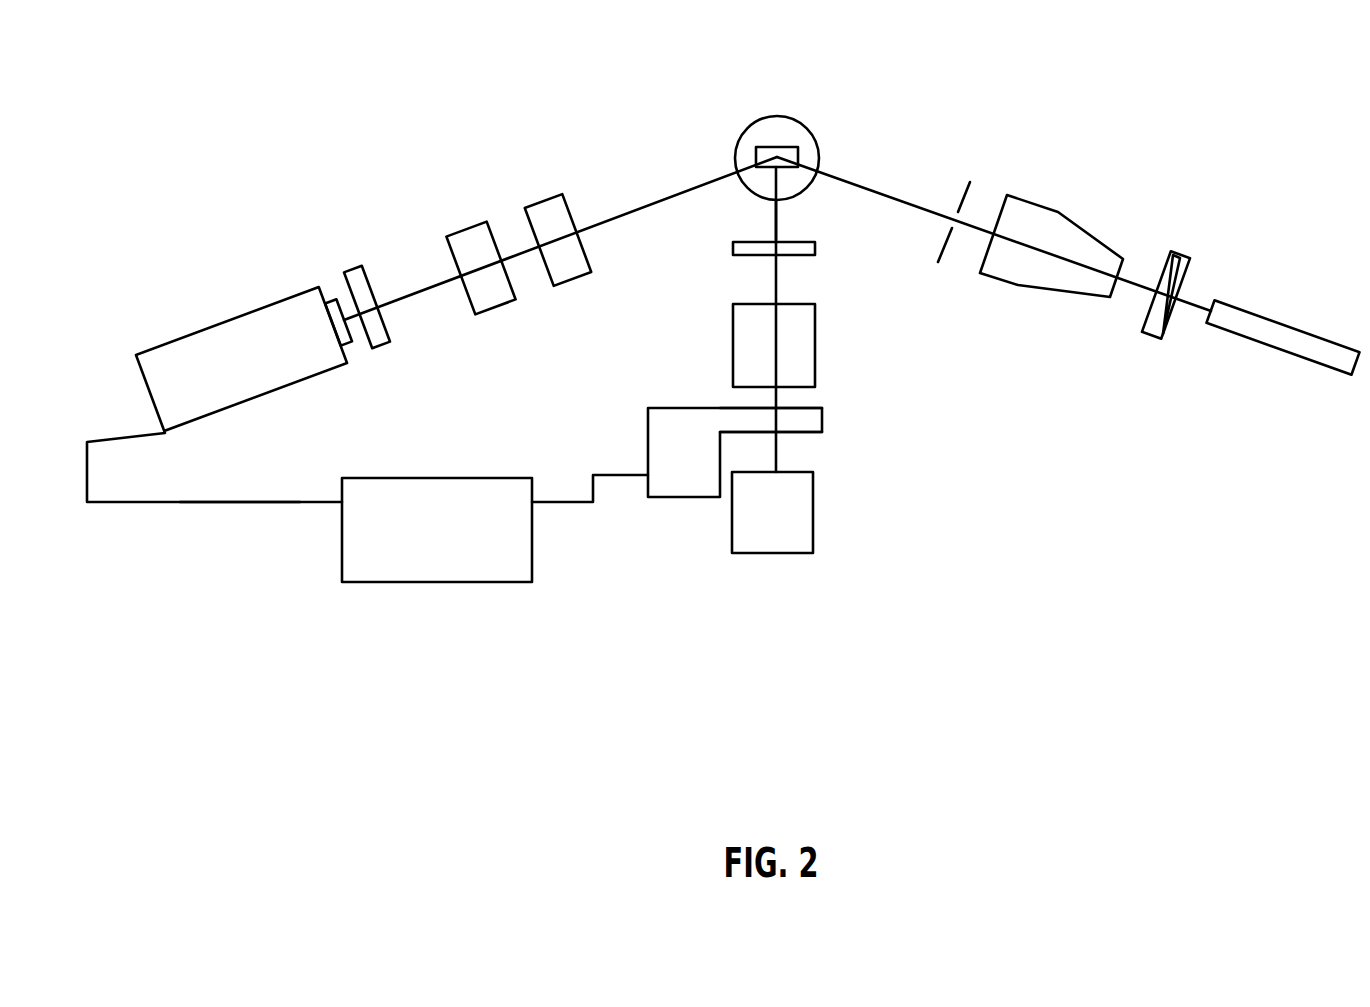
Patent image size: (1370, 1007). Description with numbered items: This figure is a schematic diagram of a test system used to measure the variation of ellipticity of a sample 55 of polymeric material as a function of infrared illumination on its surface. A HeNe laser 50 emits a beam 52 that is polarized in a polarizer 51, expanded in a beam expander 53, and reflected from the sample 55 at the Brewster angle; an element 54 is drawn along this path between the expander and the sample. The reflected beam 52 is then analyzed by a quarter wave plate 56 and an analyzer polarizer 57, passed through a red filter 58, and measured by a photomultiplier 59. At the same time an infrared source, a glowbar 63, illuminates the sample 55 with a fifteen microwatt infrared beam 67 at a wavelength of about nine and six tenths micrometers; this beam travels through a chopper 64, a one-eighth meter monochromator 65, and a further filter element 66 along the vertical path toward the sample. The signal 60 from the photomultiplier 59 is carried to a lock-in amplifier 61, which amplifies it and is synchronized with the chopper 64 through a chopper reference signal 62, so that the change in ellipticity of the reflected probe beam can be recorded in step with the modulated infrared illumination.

The HeNe laser 50 is at (1223, 297).
The polarizer 51 is at (1182, 253).
The beam 52 is at (1180, 305).
The beam expander 53 is at (1058, 212).
The aperture 54 is at (970, 182).
The sample 55 is at (776, 147).
The quarter wave plate 56 is at (540, 200).
The analyzer (polarizer) 57 is at (463, 230).
The red filter 58 is at (357, 267).
The photomultiplier 59 is at (293, 297).
The signal 60 is at (223, 502).
The lock-in amplifier 61 is at (340, 559).
The chopper reference signal 62 is at (593, 475).
The infrared source (glowbar) 63 is at (813, 510).
The chopper 64 is at (822, 422).
The monochromator 65 is at (815, 343).
The filter 66 is at (815, 250).
The infrared beam 67 is at (770, 213).